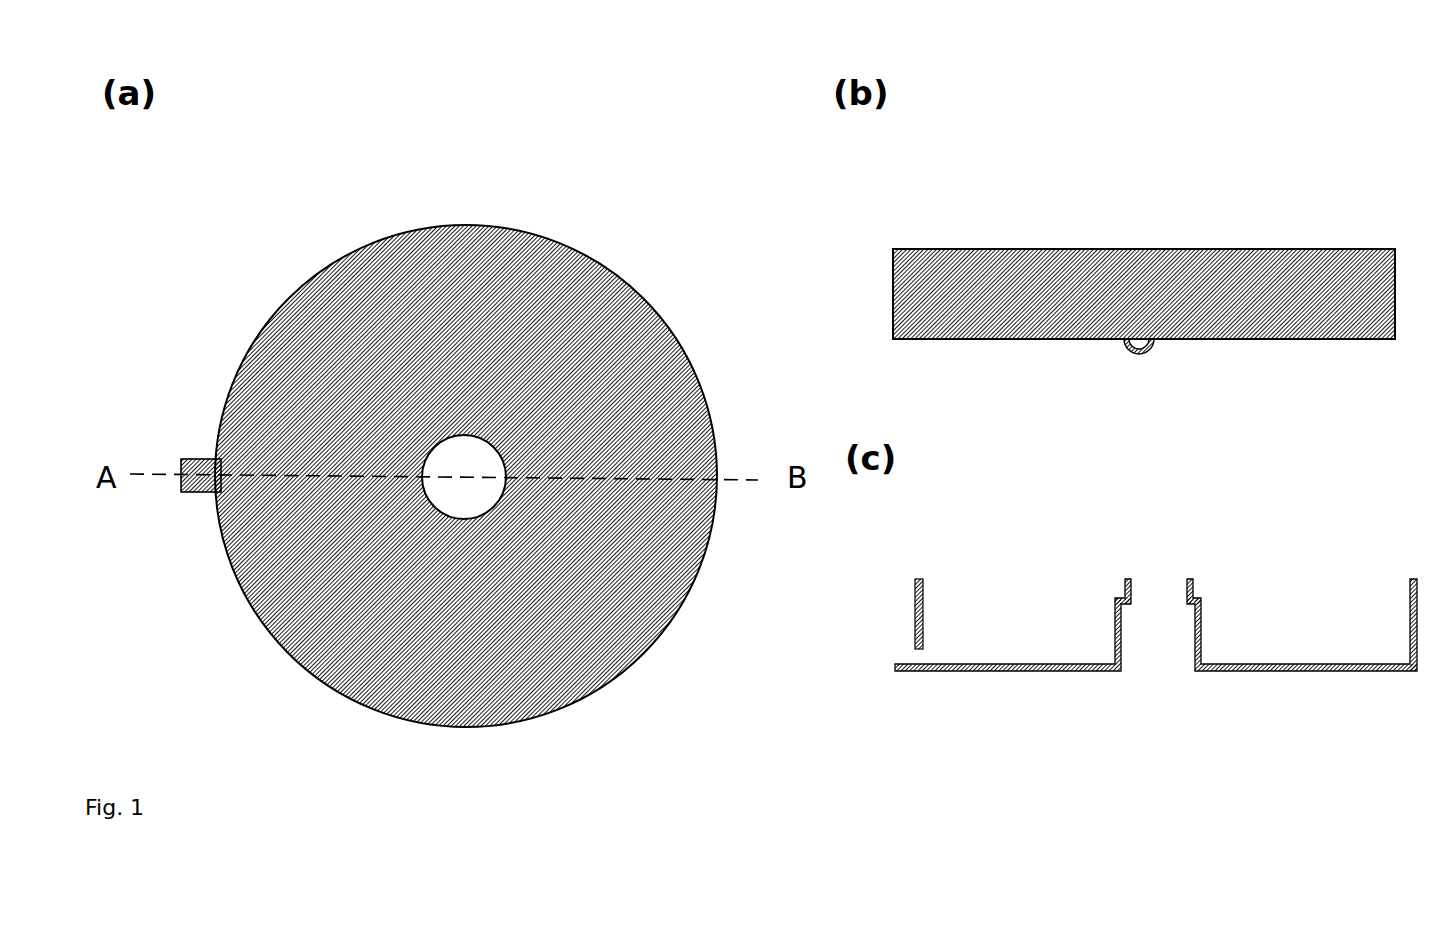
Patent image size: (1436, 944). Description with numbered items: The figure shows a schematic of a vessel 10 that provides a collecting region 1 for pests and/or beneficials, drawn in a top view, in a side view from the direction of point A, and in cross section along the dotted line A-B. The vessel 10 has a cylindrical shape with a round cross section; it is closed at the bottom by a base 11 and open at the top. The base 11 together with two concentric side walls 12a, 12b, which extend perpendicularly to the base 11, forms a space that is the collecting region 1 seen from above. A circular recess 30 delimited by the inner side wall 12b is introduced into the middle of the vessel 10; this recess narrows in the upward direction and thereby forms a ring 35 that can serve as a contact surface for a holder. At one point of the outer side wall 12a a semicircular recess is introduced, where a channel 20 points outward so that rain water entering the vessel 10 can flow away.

The collecting region 1 is at (397, 348).
The vessel 10 is at (265, 299).
The base 11 is at (1069, 343).
The outer side wall 12a is at (661, 323).
The inner side wall 12b is at (496, 510).
The channel 20 is at (190, 497).
The circular recess 30 is at (466, 456).
The ring 35 is at (1186, 608).